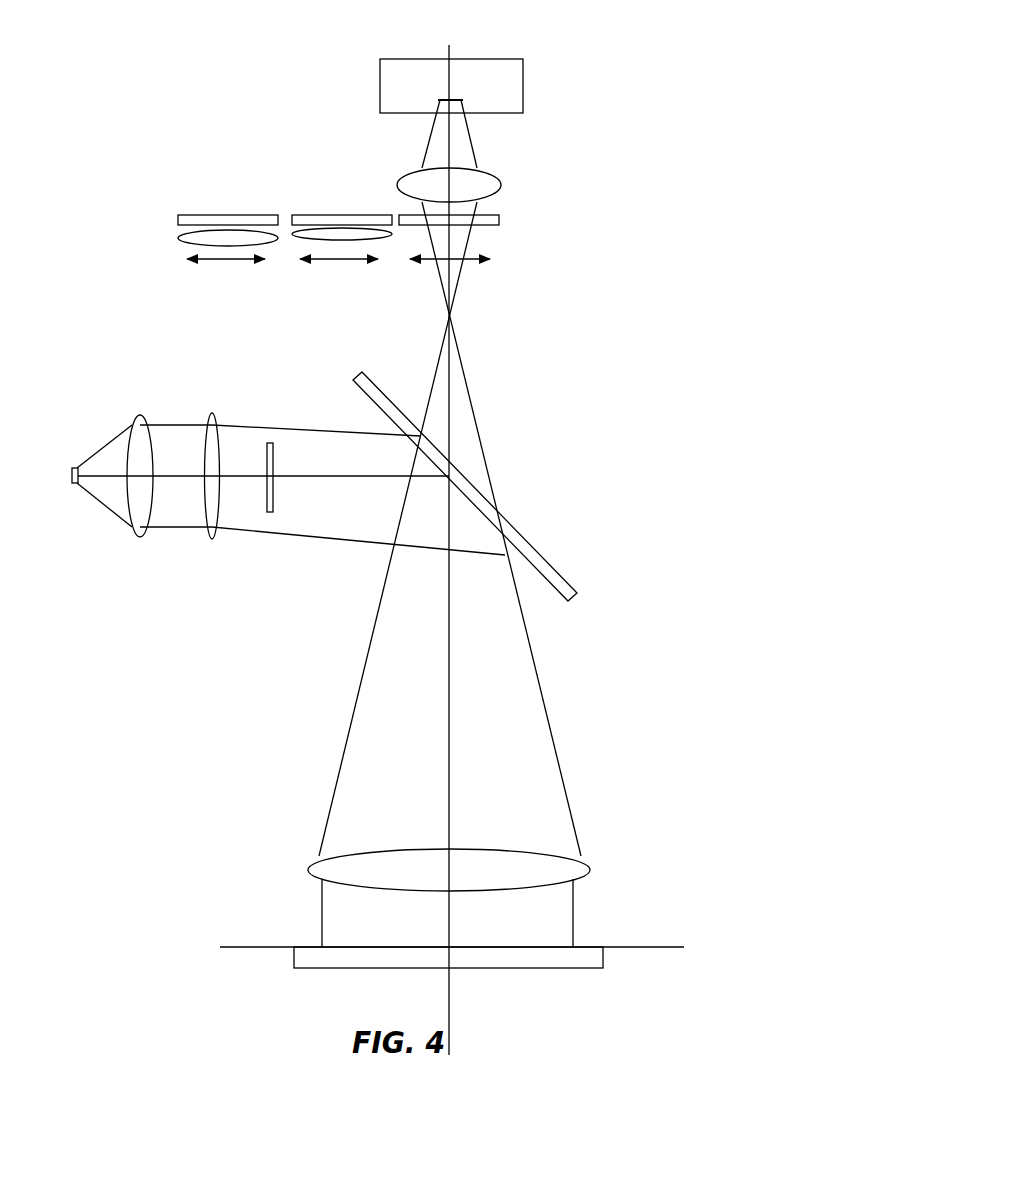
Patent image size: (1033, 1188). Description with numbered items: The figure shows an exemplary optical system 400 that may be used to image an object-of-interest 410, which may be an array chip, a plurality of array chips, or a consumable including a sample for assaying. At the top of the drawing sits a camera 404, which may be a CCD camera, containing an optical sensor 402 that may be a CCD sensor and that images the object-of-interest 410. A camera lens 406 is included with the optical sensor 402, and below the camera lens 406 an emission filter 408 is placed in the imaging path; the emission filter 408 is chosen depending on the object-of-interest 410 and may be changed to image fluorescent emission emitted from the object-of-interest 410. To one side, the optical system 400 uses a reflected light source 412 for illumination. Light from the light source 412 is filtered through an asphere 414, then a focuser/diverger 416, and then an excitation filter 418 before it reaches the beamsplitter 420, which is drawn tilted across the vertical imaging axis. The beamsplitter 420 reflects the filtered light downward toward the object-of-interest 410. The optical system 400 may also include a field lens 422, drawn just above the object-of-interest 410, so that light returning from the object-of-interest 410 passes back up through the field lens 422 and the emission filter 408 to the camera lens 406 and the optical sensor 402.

The optical system 400 is at (48, 912).
The optical sensor 402 is at (462, 106).
The camera 404 is at (378, 92).
The camera lens 406 is at (508, 191).
The emission filter 408 is at (521, 221).
The object-of-interest 410 is at (498, 970).
The light source 412 is at (79, 476).
The asphere 414 is at (132, 407).
The focuser/diverger 416 is at (209, 550).
The excitation filter 418 is at (260, 433).
The beamsplitter 420 is at (550, 562).
The field lens 422 is at (584, 862).